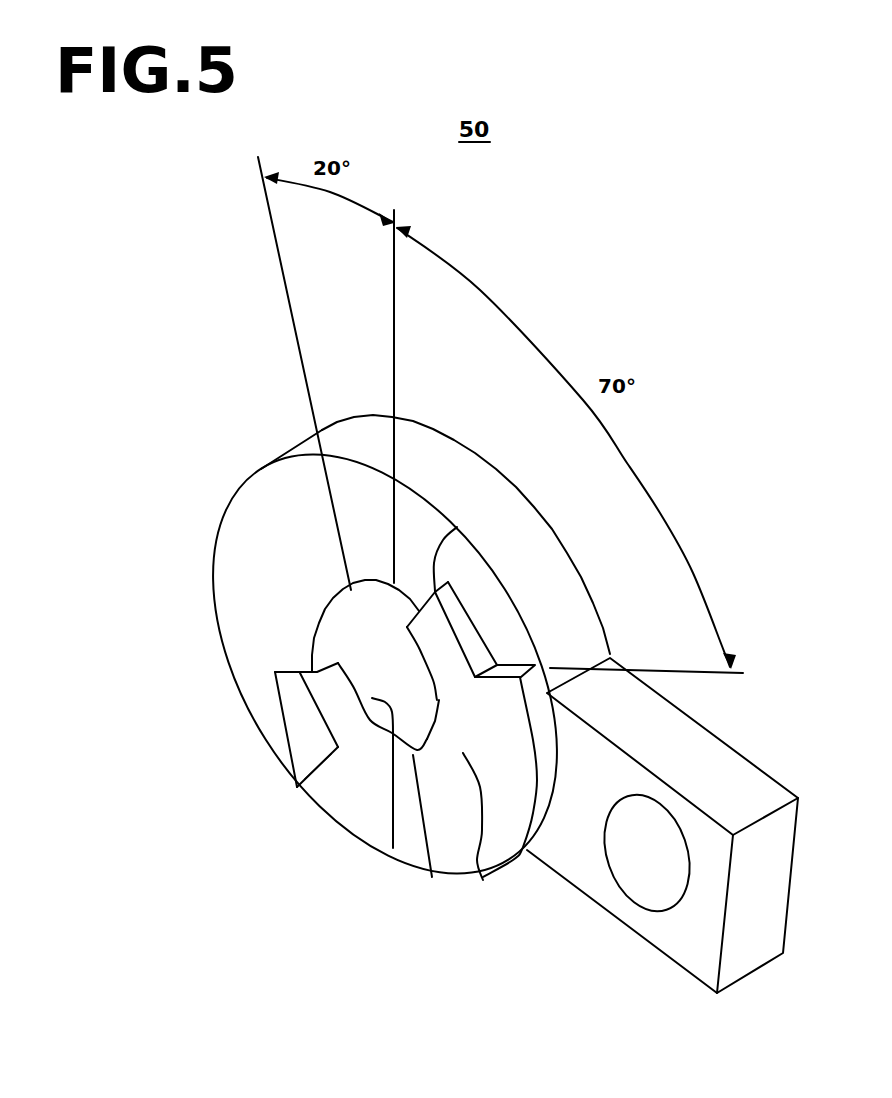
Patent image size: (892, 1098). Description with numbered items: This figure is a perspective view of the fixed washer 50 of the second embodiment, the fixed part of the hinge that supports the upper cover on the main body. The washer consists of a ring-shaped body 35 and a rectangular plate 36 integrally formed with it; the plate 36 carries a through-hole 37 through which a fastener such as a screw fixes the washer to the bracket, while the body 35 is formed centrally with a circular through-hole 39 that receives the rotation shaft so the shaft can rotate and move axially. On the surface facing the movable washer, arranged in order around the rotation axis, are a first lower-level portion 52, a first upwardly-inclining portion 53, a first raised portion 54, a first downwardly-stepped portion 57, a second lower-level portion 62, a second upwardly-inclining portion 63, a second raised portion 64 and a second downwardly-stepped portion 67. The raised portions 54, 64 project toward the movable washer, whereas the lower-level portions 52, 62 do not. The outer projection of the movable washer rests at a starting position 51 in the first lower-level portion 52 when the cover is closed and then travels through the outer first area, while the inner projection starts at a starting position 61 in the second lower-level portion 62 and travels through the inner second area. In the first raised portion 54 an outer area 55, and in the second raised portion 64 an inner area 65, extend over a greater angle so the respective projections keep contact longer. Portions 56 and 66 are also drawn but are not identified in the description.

The fixed washer 50 is at (470, 681).
The ring-shaped body 35 is at (462, 452).
The plate 36 is at (662, 825).
The through-hole 37 is at (658, 887).
The through-hole 39 is at (392, 732).
The starting position 51 is at (522, 562).
The first lower-level portion 52 is at (467, 532).
The first upwardly-inclining portion 53 is at (361, 477).
The first raised portion 54 is at (237, 553).
The area 55 is at (285, 745).
The front face region 56 is at (310, 603).
The first downwardly-stepped portion 57 is at (311, 777).
The starting position 61 is at (328, 688).
The second lower-level portion 62 is at (362, 723).
The second upwardly-inclining portion 63 is at (422, 848).
The second raised portion 64 is at (482, 880).
The area 65 is at (437, 627).
The projection end surface 66 is at (533, 663).
The second downwardly-stepped portion 67 is at (469, 560).